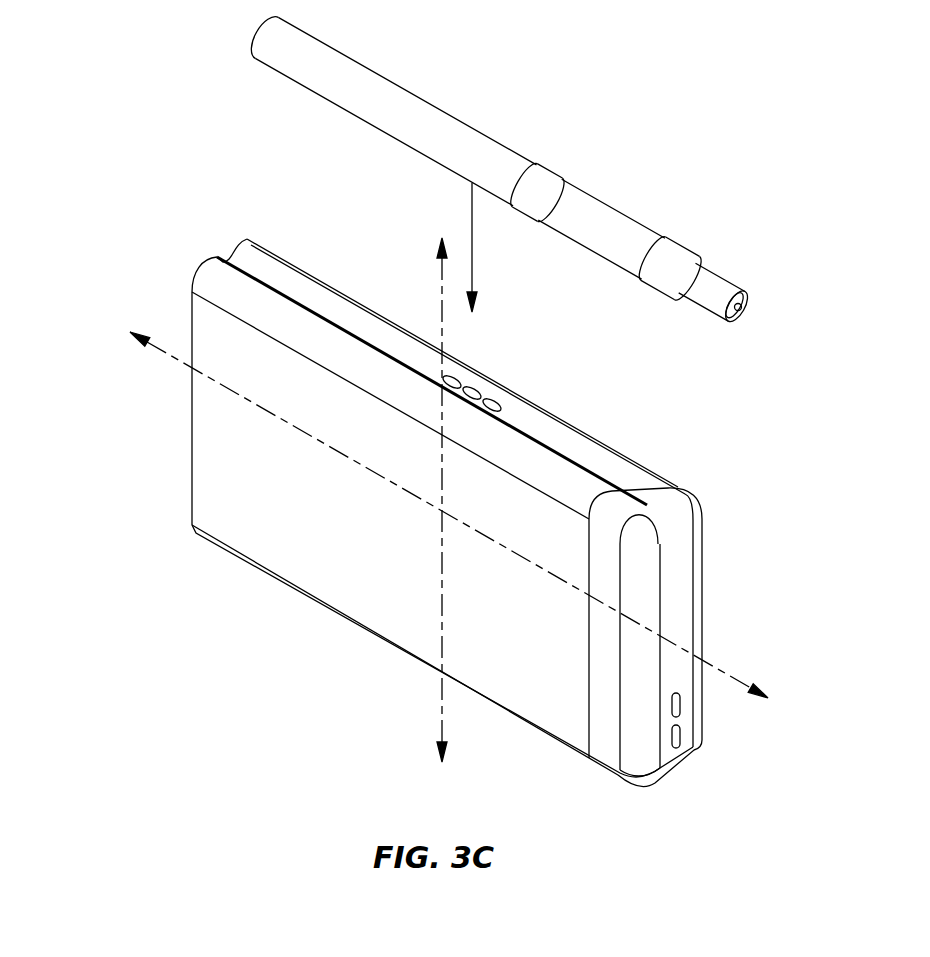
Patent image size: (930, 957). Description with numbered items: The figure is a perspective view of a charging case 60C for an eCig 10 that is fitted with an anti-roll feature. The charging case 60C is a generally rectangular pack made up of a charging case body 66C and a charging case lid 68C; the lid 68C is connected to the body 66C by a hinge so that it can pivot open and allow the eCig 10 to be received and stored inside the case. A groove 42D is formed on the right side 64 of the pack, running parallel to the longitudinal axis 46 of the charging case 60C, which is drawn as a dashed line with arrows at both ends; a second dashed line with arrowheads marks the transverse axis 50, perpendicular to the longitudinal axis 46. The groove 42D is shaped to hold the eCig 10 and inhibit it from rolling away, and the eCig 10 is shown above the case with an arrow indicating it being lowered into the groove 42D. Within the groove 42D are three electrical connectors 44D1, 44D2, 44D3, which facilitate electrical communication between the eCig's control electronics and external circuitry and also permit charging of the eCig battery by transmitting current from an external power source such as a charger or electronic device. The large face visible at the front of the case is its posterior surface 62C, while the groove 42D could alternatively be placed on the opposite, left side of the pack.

The eCig 10 is at (503, 87).
The groove 42D is at (310, 292).
The connector 44D1 is at (447, 382).
The connector 44D2 is at (472, 393).
The connector 44D3 is at (492, 405).
The right side 64 is at (630, 457).
The charging case 60C is at (142, 391).
The posterior surface 62C is at (220, 477).
The charging case body 66C is at (367, 592).
The charging case lid 68C is at (703, 620).
The longitudinal axis 46 is at (724, 670).
The transverse axis 50 is at (440, 710).